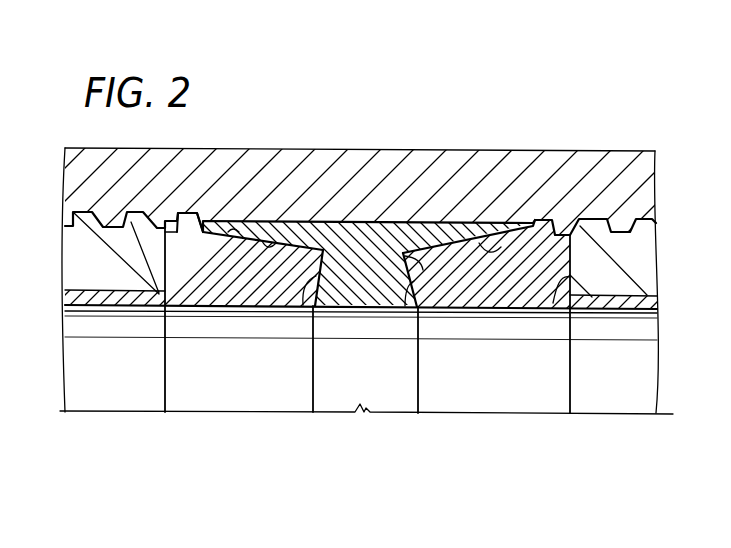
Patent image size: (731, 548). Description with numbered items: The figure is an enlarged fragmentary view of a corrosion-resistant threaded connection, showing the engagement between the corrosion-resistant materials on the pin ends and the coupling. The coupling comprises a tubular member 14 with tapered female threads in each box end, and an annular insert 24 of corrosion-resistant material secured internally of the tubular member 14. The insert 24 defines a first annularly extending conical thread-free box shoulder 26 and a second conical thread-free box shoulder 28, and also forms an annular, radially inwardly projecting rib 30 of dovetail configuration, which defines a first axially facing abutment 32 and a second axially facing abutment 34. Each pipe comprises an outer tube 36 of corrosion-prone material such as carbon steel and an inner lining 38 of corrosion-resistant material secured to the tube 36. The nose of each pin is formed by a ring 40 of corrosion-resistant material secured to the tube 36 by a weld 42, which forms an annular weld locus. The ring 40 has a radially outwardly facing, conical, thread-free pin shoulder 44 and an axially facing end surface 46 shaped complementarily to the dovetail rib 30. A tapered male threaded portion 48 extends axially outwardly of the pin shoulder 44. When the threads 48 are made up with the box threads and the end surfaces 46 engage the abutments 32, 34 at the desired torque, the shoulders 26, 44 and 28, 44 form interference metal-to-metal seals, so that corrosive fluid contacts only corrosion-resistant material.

The tubular member 14 is at (580, 163).
The annular insert 24 is at (399, 324).
The first box shoulder 26 is at (281, 242).
The second box shoulder 28 is at (469, 170).
The rib 30 is at (417, 302).
The first abutment 32 is at (303, 280).
The second abutment 34 is at (432, 197).
The outer tube 36 is at (640, 246).
The lining 38 is at (618, 305).
The ring 40 is at (293, 339).
The weld 42 is at (196, 222).
The pin shoulder 44 is at (197, 304).
The end surface 46 is at (391, 241).
The male threaded portion 48 is at (138, 217).